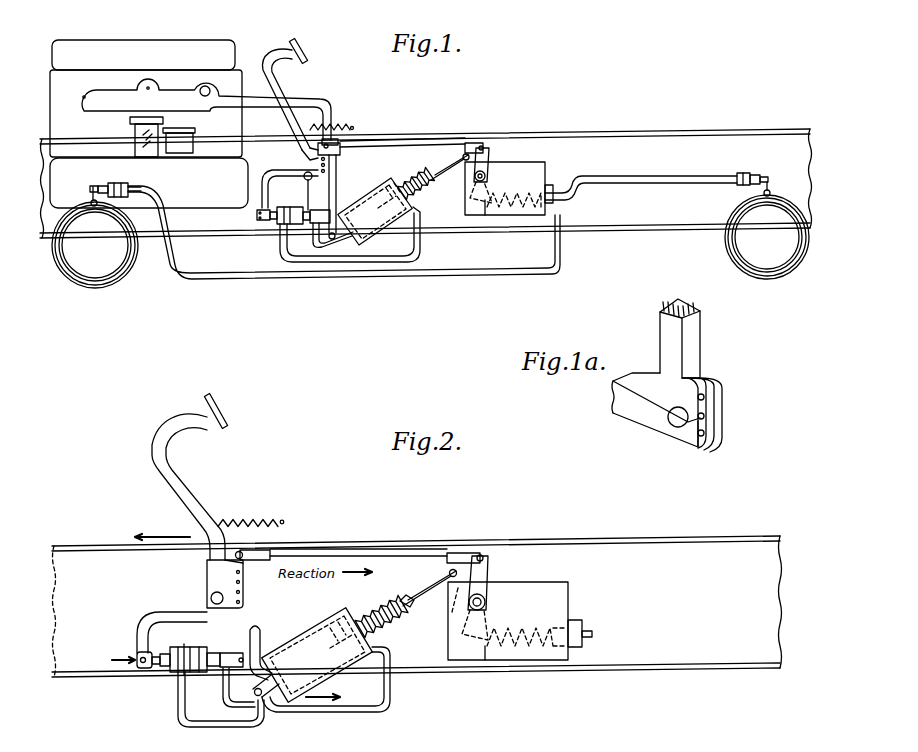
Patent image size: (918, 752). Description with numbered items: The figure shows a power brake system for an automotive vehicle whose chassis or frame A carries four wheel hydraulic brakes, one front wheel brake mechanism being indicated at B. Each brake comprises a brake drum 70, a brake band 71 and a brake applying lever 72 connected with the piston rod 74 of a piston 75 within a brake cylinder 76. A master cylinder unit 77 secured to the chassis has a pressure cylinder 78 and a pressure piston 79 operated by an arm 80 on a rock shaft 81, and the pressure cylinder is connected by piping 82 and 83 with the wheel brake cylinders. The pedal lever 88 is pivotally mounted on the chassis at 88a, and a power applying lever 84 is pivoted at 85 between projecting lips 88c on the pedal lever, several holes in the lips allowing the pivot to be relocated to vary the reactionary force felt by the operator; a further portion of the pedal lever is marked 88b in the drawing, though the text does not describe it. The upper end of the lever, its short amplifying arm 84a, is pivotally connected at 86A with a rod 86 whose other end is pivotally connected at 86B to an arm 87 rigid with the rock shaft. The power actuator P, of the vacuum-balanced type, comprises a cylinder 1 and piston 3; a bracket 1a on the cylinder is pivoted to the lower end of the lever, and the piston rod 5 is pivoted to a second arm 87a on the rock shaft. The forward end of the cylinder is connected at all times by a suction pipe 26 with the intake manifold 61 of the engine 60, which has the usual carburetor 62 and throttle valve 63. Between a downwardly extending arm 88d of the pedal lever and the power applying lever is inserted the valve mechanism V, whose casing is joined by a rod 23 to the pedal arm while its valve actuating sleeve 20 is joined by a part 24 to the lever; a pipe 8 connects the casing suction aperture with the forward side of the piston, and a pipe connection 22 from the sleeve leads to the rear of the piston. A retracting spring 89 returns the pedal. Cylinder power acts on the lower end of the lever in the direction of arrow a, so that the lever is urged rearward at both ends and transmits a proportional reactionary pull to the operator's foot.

In FIG. 1, the cylinder 1 is at (375, 227).
In FIG. 2, the cylinder 1 is at (298, 617).
In FIG. 1, the bracket 1a is at (322, 241).
In FIG. 2, the bracket 1a is at (263, 697).
In FIG. 1, the piston 3 is at (409, 188).
In FIG. 2, the piston 3 is at (358, 605).
In FIG. 2, the piston rod 5 is at (413, 596).
In FIG. 1, the pipe 8 is at (282, 249).
In FIG. 2, the pipe 8 is at (214, 728).
In FIG. 2, the valve actuating sleeve 20 is at (214, 668).
In FIG. 1, the pipe connection 22 is at (418, 263).
In FIG. 2, the pipe connection 22 is at (228, 707).
In FIG. 2, the rod 23 is at (160, 669).
In FIG. 2, the part 24 is at (222, 652).
In FIG. 1, the suction pipe 26 is at (329, 104).
In FIG. 2, the suction pipe 26 is at (262, 636).
In FIG. 1, the internal combustion engine 60 is at (175, 50).
In FIG. 1, the intake manifold 61 is at (97, 96).
In FIG. 1, the carburetor 62 is at (194, 141).
In FIG. 1, the throttle valve 63 is at (133, 138).
In FIG. 1, the brake drum 70 is at (107, 250).
In FIG. 1, the brake band 71 is at (104, 288).
In FIG. 1, the brake applying lever 72 is at (90, 192).
In FIG. 1, the piston rod 74 is at (102, 186).
In FIG. 1, the piston 75 is at (117, 183).
In FIG. 1, the brake cylinder 76 is at (134, 187).
In FIG. 1, the master cylinder unit 77 is at (522, 165).
In FIG. 2, the master cylinder unit 77 is at (568, 597).
In FIG. 1, the pressure cylinder 78 is at (512, 216).
In FIG. 2, the pressure cylinder 78 is at (533, 666).
In FIG. 1, the pressure piston 79 is at (492, 216).
In FIG. 2, the pressure piston 79 is at (484, 664).
In FIG. 1, the arm 80 is at (471, 198).
In FIG. 2, the arm 80 is at (462, 634).
In FIG. 1, the rock shaft 81 is at (488, 177).
In FIG. 2, the rock shaft 81 is at (486, 603).
In FIG. 1, the piping 82 is at (652, 181).
In FIG. 1, the piping 83 is at (340, 279).
In FIG. 1, the power applying lever 84 is at (338, 182).
In FIG. 2, the power applying lever 84 is at (244, 612).
In FIG. 2, the amplifying arm 84a is at (232, 567).
In FIG. 1, the pivot 85 is at (311, 145).
In FIG. 1A, the pivot 85 is at (705, 433).
In FIG. 2, the pivot 85 is at (242, 585).
In FIG. 1, the rod 86 is at (399, 143).
In FIG. 2, the rod 86 is at (378, 550).
In FIG. 1, the pivotal connection 86A is at (340, 142).
In FIG. 2, the pivotal connection 86A is at (250, 554).
In FIG. 1, the pivotal connection 86B is at (481, 142).
In FIG. 2, the pivotal connection 86B is at (481, 553).
In FIG. 1, the arm 87 is at (488, 158).
In FIG. 2, the arm 87 is at (486, 577).
In FIG. 2, the arm 87a is at (458, 590).
In FIG. 1, the brake lever 88 is at (288, 96).
In FIG. 1A, the brake lever 88 is at (665, 322).
In FIG. 2, the brake lever 88 is at (183, 497).
In FIG. 1, the pivot 88a is at (307, 181).
In FIG. 2, the pivot 88a is at (211, 598).
In FIG. 1, the tube 88b is at (318, 158).
In FIG. 2, the tube 88b is at (210, 575).
In FIG. 1A, the projecting lips 88c is at (718, 378).
In FIG. 2, the downwardly extending arm 88d is at (137, 650).
In FIG. 1, the retracting spring 89 is at (339, 123).
In FIG. 2, the retracting spring 89 is at (247, 516).
In FIG. 1, the chassis A is at (585, 139).
In FIG. 2, the chassis A is at (622, 548).
In FIG. 1, the front wheel brake mechanism B is at (424, 269).
In FIG. 1, the power actuator P is at (375, 211).
In FIG. 2, the power actuator P is at (317, 640).
In FIG. 2, the valve V is at (188, 650).
In FIG. 2, the arrow a is at (323, 689).